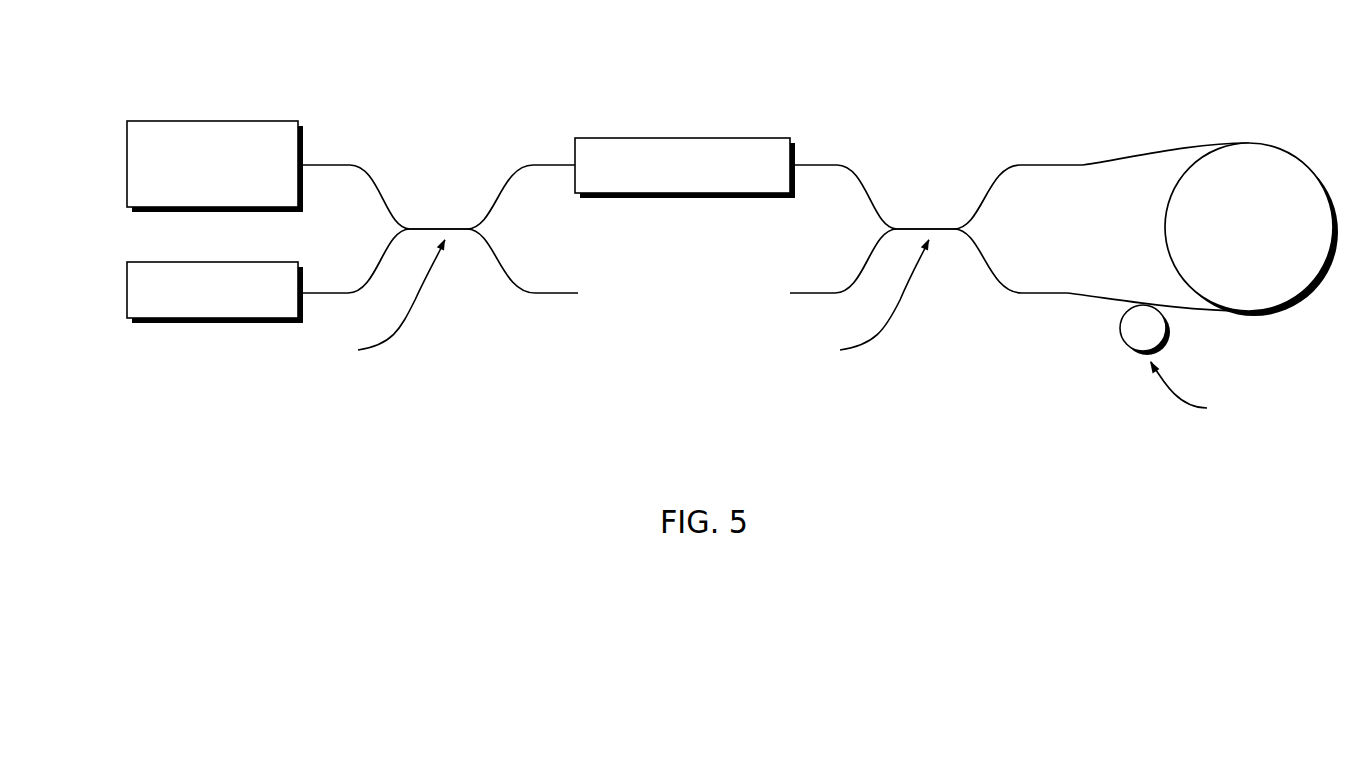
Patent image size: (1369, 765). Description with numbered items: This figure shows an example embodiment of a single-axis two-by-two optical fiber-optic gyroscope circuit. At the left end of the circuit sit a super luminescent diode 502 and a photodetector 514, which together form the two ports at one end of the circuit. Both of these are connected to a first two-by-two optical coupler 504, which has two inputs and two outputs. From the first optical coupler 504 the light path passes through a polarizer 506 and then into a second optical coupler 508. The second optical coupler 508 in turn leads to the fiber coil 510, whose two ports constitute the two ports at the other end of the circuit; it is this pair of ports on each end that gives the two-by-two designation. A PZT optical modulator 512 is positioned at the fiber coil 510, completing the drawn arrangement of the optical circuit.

The super luminescent diode 502 is at (127, 165).
The first 2×2 optical coupler 504 is at (443, 212).
The polarizer 506 is at (607, 138).
The second optical coupler 508 is at (928, 212).
The fiber coil 510 is at (1285, 152).
The PZT optical modulator 512 is at (1128, 346).
The photodetector 514 is at (127, 292).